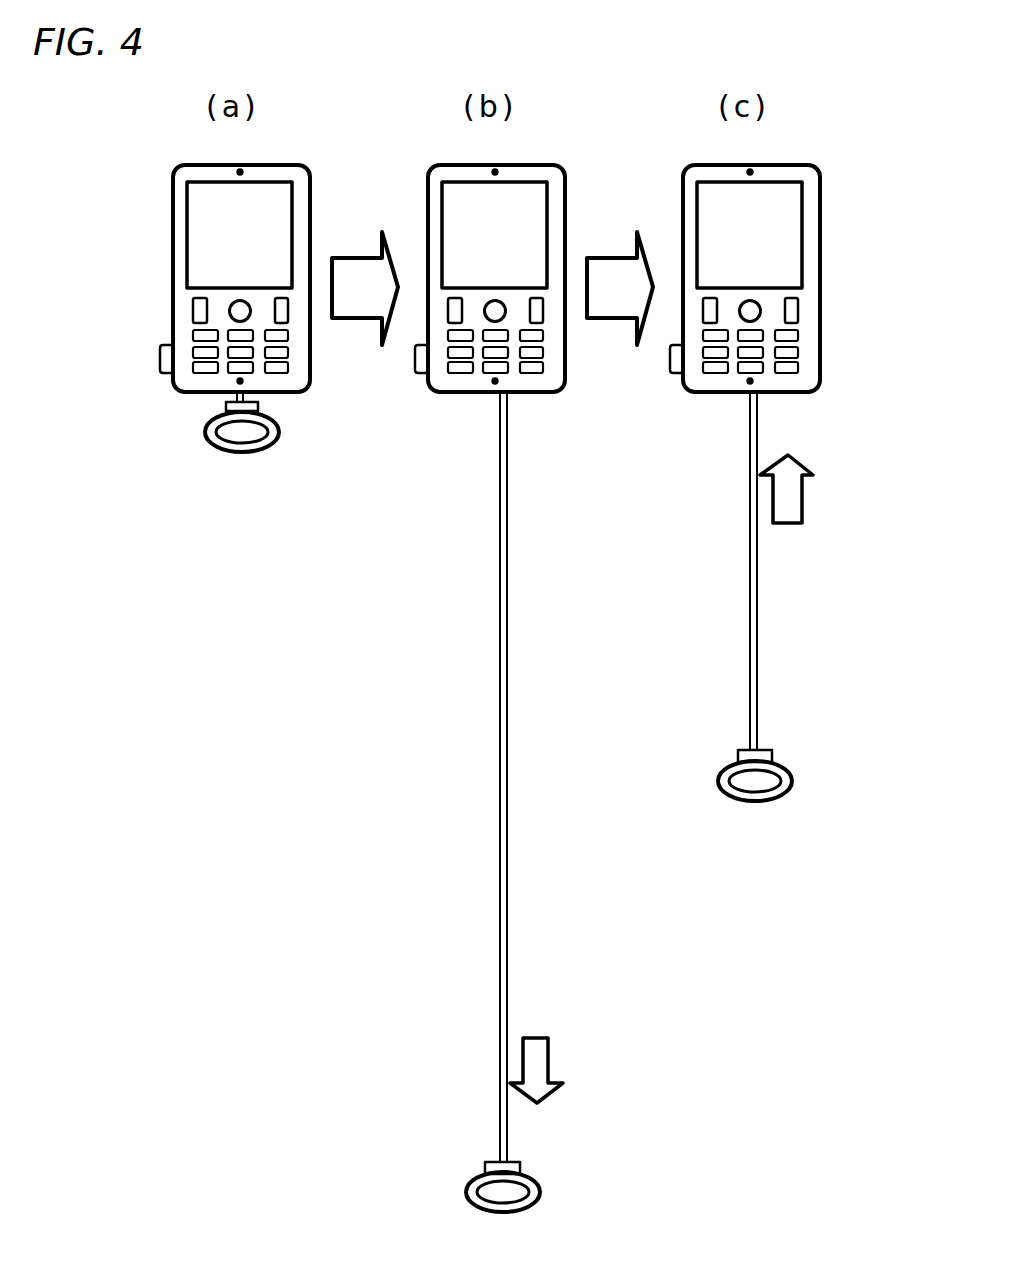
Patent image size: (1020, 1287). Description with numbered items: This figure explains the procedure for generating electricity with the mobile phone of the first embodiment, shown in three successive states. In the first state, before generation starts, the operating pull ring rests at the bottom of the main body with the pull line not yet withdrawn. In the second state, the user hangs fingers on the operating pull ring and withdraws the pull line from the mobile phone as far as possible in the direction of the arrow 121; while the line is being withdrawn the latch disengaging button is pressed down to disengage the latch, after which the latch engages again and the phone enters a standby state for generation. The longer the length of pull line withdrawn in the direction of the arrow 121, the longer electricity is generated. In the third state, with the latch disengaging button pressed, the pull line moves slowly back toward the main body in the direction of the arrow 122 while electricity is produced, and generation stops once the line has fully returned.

The arrow 121 is at (548, 1060).
The arrow 122 is at (802, 500).